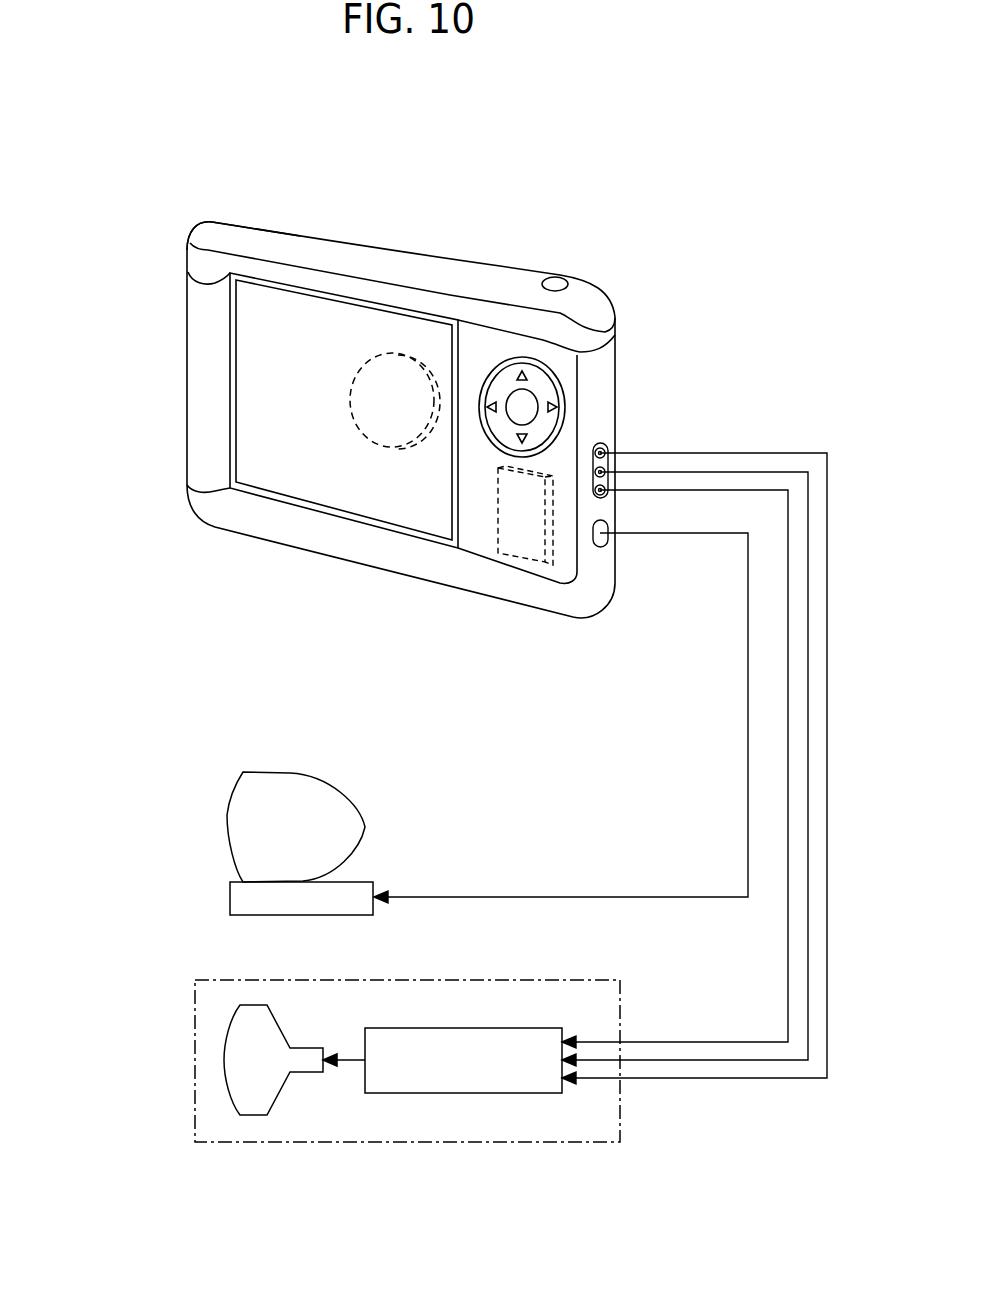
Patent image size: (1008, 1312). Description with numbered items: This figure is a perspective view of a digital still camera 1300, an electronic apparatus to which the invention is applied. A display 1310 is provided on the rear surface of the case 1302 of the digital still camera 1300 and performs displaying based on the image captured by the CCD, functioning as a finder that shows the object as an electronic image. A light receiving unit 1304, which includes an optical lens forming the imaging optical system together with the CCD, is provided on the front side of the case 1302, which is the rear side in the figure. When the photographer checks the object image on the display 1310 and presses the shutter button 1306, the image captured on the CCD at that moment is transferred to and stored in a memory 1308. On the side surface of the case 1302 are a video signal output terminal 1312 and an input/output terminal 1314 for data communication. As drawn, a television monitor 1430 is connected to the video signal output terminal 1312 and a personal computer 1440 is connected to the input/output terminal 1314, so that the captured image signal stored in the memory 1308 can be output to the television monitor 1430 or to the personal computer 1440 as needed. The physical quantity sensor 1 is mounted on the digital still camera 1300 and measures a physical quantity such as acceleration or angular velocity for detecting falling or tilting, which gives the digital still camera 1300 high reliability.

The digital still camera 1300 is at (518, 193).
The case 1302 is at (210, 268).
The light receiving unit 1304 is at (393, 353).
The shutter button 1306 is at (557, 277).
The memory 1308 is at (513, 557).
The display 1310 is at (337, 490).
The video signal output terminal 1312 is at (603, 448).
The input/output terminal for data communication 1314 is at (607, 537).
The physical quantity sensor 1 is at (480, 532).
The television monitor 1430 is at (195, 1050).
The personal computer 1440 is at (228, 810).